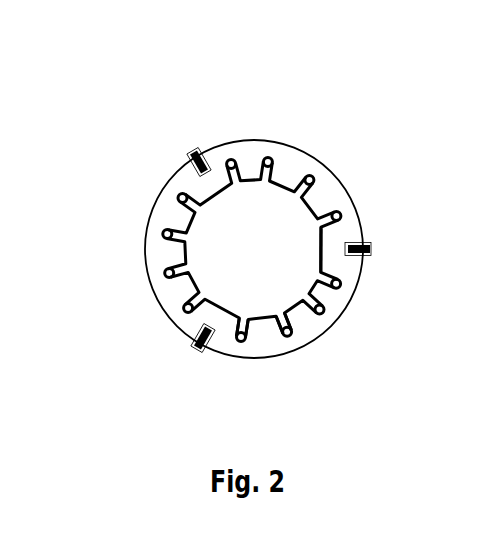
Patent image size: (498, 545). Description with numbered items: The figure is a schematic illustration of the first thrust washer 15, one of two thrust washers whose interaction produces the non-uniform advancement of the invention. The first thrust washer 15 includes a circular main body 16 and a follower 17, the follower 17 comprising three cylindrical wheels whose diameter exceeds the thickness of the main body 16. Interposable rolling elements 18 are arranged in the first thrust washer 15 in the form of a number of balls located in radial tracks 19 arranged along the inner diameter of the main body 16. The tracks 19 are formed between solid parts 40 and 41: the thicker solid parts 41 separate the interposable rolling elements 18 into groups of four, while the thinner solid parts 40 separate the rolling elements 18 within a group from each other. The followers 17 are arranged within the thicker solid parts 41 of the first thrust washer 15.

The first thrust washer 15 is at (138, 116).
The circular main body 16 is at (295, 157).
The follower 17 is at (197, 153).
The interposable rolling elements 18 is at (242, 342).
The radial tracks 19 is at (288, 321).
The thinner solid parts 40 is at (183, 222).
The thicker solid parts 41 is at (332, 254).